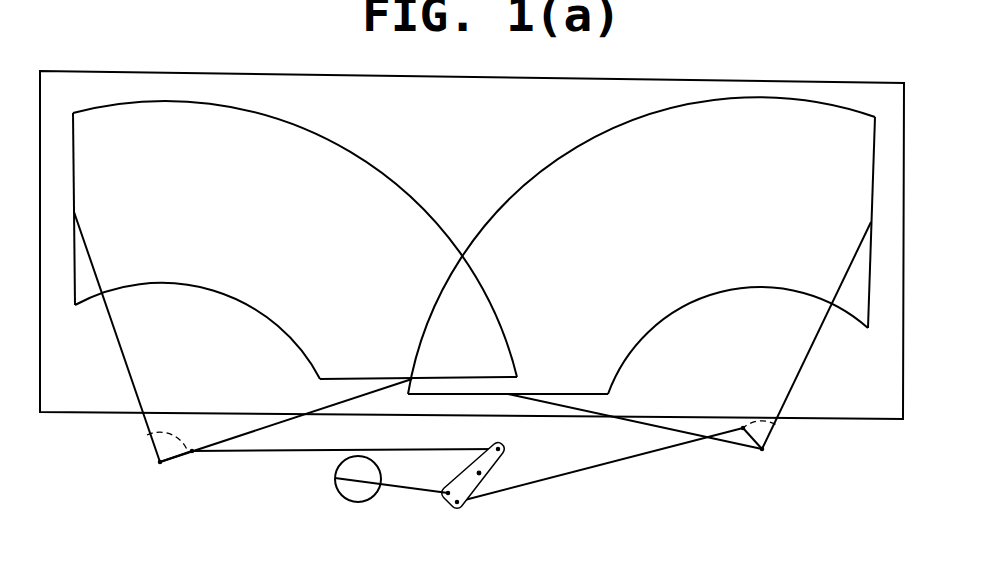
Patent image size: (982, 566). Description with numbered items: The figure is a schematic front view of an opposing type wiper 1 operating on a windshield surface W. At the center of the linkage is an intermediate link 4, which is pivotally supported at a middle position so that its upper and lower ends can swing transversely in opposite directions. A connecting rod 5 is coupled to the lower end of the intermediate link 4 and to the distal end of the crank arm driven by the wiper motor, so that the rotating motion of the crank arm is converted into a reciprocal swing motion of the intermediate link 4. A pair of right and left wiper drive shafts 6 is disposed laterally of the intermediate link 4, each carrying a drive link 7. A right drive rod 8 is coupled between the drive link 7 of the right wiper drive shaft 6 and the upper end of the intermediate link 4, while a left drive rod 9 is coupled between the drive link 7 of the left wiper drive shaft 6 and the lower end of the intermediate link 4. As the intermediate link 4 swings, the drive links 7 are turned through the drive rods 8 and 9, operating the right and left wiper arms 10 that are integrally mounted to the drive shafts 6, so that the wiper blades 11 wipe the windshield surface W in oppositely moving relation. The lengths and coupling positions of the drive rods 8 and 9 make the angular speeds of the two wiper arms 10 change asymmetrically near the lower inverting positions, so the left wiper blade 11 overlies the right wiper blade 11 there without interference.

The wiper 1 is at (520, 506).
The intermediate link 4 is at (447, 499).
The connecting rod 5 is at (400, 492).
The wiper drive shaft 6 is at (160, 465).
The drive link 7 is at (185, 457).
The right drive rod 8 is at (255, 453).
The left drive rod 9 is at (654, 455).
The wiper arm 10 is at (233, 438).
The wiper blade 11 is at (370, 377).
The windshield surface W is at (877, 405).